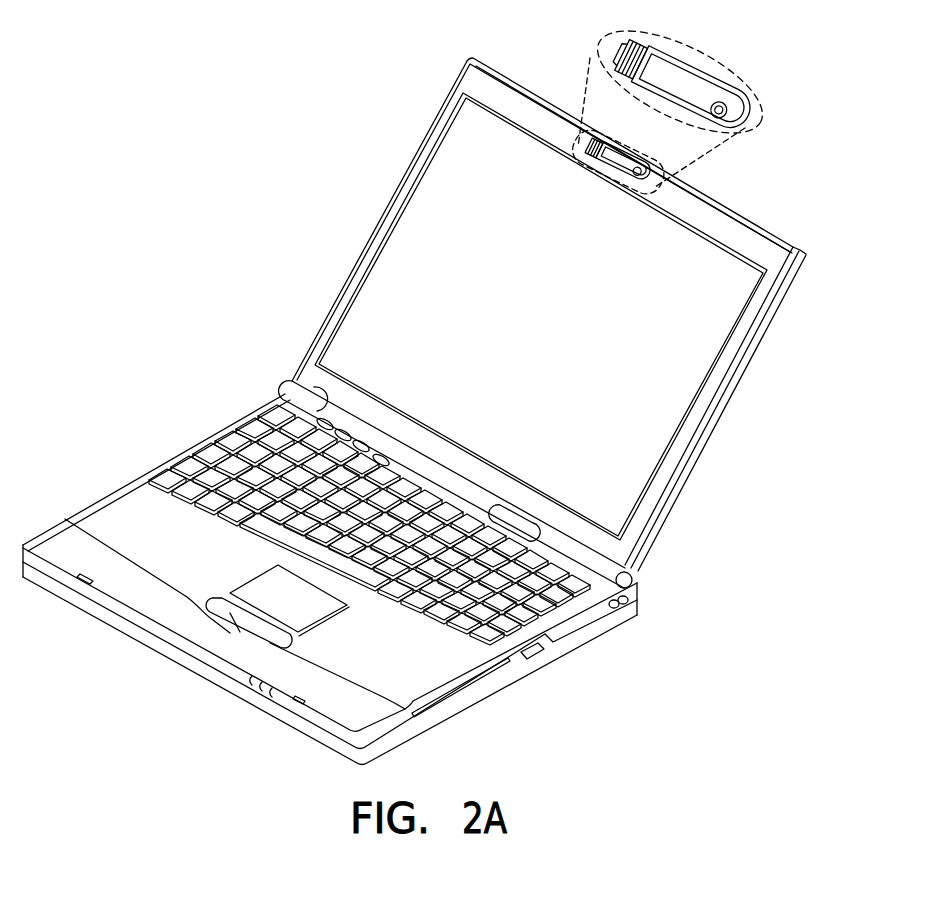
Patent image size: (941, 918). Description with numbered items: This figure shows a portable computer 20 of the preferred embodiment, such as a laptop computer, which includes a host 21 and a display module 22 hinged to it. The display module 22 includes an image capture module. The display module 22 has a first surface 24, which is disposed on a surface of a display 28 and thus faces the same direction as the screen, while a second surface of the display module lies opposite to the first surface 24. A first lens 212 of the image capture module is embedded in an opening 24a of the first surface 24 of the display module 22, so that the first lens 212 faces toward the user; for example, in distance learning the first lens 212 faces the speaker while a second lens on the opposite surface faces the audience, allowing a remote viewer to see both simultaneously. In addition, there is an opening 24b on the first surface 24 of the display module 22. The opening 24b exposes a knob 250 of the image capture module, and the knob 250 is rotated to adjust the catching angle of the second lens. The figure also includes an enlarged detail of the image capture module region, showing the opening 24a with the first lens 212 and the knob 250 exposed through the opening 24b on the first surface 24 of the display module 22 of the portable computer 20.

The portable computer 20 is at (787, 721).
The host 21 is at (553, 641).
The display module 22 is at (686, 441).
The first surface 24 is at (767, 254).
The opening 24a is at (726, 106).
The opening 24b is at (600, 82).
The display 28 is at (371, 291).
The first lens 212 is at (738, 119).
The knob 250 is at (653, 50).